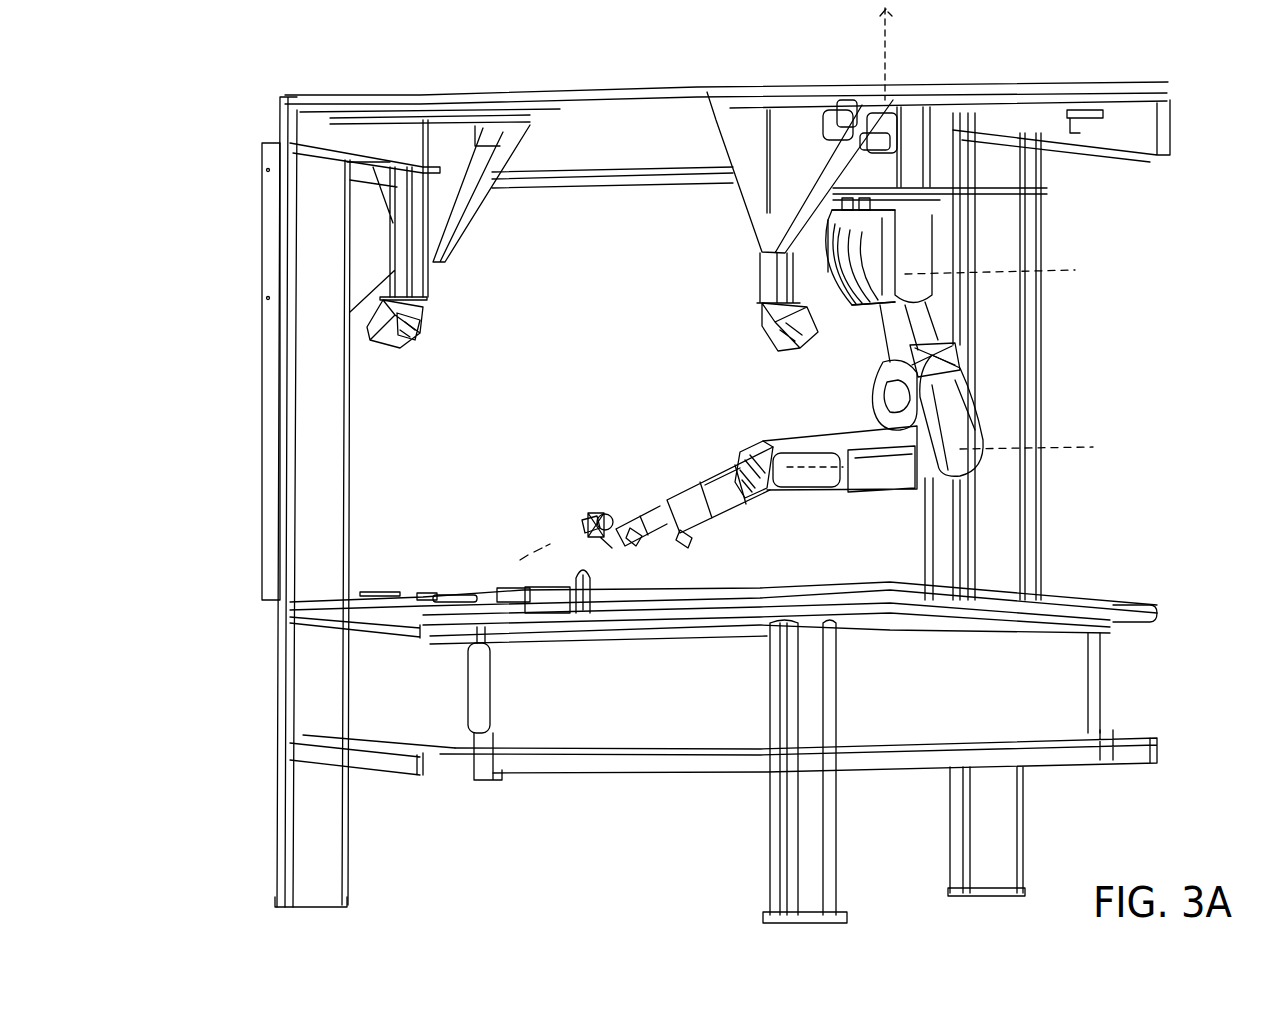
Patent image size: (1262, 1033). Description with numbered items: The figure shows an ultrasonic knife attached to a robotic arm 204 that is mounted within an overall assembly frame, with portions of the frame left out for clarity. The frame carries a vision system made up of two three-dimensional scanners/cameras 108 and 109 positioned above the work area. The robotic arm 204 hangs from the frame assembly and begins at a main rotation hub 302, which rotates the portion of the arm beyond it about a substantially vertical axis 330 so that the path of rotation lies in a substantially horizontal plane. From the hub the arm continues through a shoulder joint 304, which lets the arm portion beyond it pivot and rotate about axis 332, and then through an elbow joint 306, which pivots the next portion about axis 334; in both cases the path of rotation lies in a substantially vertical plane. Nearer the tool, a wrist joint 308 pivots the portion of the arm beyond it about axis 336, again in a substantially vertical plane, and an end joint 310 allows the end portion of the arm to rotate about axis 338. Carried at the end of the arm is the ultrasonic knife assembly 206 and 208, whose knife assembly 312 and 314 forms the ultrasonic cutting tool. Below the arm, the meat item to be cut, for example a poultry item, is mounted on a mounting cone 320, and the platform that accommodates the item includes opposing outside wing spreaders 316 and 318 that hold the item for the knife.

The three dimensional scanner/camera 108 is at (392, 356).
The three dimensional scanner/camera 109 is at (752, 314).
The robotic arm 204 is at (783, 430).
The ultrasonic knife assembly 206 is at (667, 478).
The ultrasonic knife assembly 208 is at (633, 501).
The main rotation hub 302 is at (937, 197).
The shoulder joint 304 is at (905, 306).
The elbow joint 306 is at (949, 484).
The wrist joint 308 is at (775, 496).
The end joint 310 is at (747, 500).
The knife assembly 312 is at (687, 543).
The knife assembly 314 is at (640, 541).
The outside wing spreader 316 is at (614, 555).
The outside wing spreader 318 is at (578, 525).
The mounting cone 320 is at (581, 570).
The vertical axis 330 is at (899, 48).
The axis 332 is at (1080, 285).
The axis 334 is at (1099, 465).
The axis 336 is at (819, 480).
The axis 338 is at (511, 550).